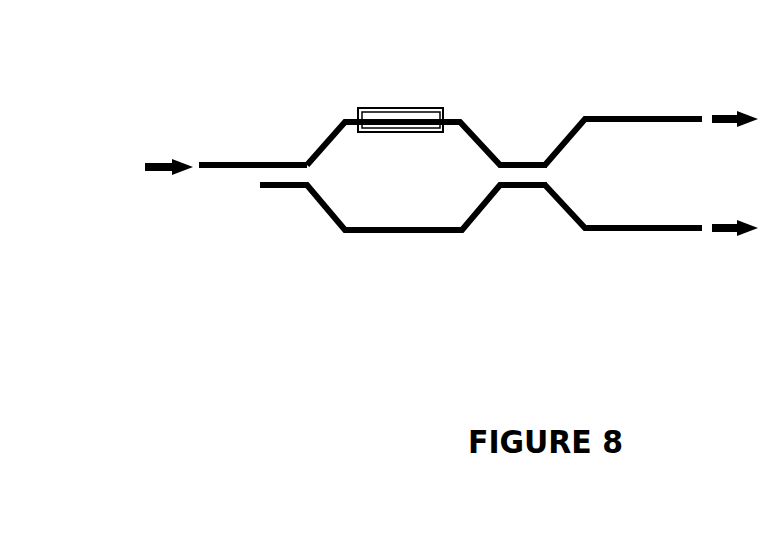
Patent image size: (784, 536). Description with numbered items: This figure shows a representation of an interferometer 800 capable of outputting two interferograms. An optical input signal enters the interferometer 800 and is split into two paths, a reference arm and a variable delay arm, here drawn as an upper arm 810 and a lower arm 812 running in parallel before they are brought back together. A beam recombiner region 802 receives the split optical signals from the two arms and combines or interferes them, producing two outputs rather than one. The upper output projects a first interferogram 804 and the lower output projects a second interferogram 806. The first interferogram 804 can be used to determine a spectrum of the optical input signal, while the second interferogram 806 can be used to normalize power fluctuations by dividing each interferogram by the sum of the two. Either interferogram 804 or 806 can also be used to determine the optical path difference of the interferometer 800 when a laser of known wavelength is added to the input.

The interferometer 800 is at (418, 200).
The coupling region 802 is at (525, 136).
The first interferogram 804 is at (642, 115).
The second interferogram 806 is at (642, 225).
The upper waveguide arm 810 is at (330, 137).
The lower waveguide arm 812 is at (330, 205).